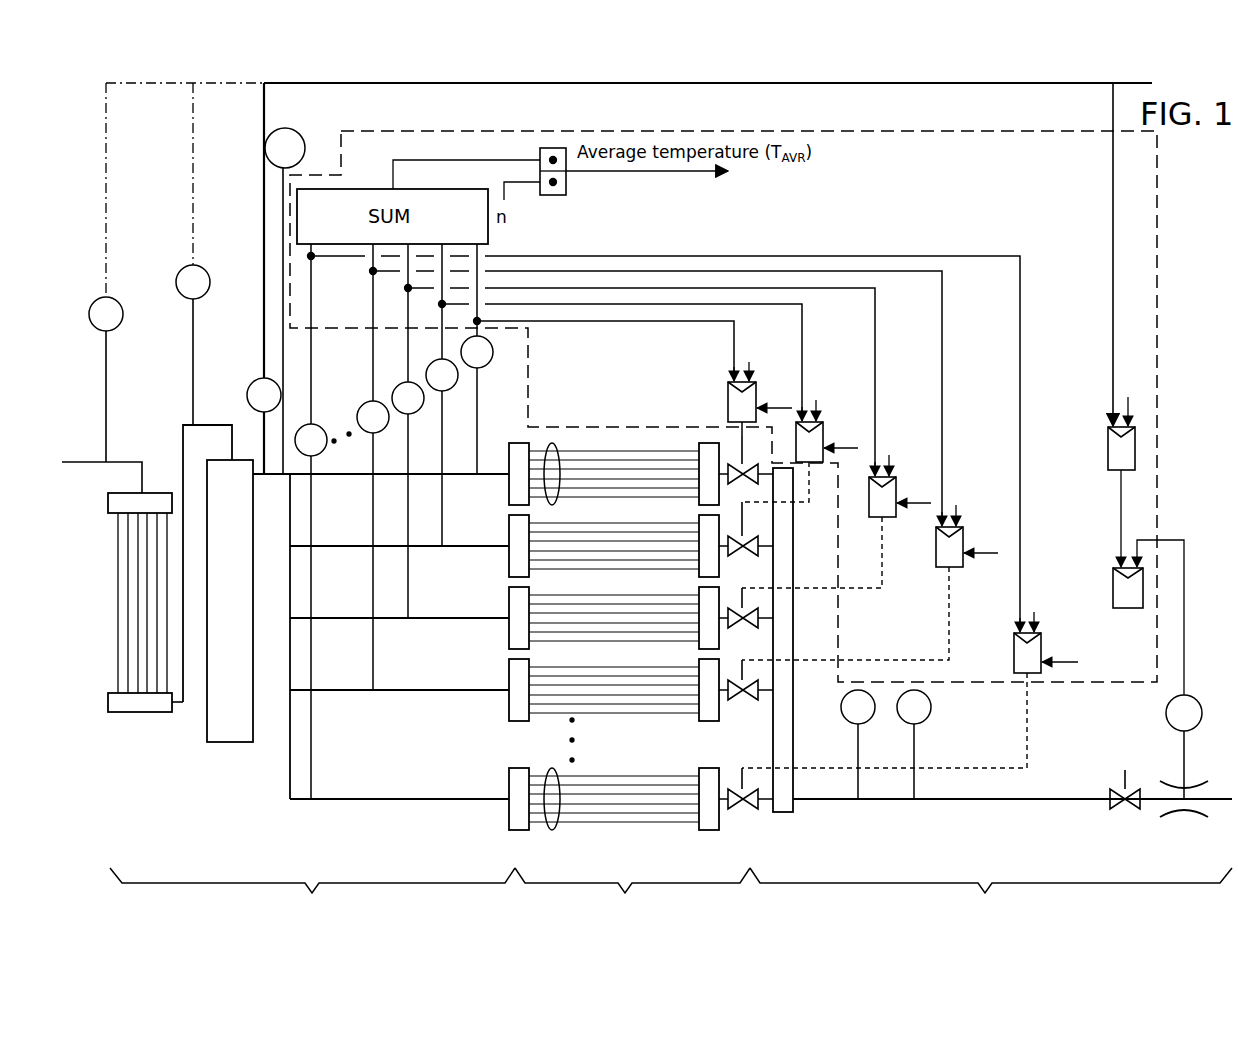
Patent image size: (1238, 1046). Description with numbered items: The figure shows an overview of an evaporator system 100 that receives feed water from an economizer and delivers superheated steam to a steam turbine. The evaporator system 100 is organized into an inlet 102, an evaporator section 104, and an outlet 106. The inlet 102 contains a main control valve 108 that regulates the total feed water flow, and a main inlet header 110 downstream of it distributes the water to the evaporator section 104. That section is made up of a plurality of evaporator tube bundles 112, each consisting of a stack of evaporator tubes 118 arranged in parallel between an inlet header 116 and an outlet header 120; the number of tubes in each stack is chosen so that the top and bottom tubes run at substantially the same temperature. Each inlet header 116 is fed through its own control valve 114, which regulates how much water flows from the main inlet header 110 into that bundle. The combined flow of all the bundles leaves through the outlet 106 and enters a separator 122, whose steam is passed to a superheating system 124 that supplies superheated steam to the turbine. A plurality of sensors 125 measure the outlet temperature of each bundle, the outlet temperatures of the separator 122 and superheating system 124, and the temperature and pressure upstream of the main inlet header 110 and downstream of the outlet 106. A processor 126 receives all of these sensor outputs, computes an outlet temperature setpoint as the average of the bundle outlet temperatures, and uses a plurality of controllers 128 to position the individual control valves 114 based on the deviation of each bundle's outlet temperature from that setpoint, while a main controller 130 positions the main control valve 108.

The evaporator system 100 is at (110, 838).
The inlet 102 is at (991, 895).
The evaporator section 104 is at (632, 895).
The outlet 106 is at (312, 895).
The main control valve 108 is at (1117, 786).
The main inlet header 110 is at (782, 815).
The evaporator tube bundle 112 is at (552, 443).
The control valve 114 is at (746, 812).
The inlet header 116 is at (708, 443).
The evaporator tubes 118 is at (672, 788).
The outlet header 120 is at (507, 488).
The separator 122 is at (228, 778).
The superheating system 124 is at (112, 530).
The sensors 125 is at (298, 134).
The processor 126 is at (878, 133).
The controllers 128 is at (726, 402).
The main controller 130 is at (1106, 438).